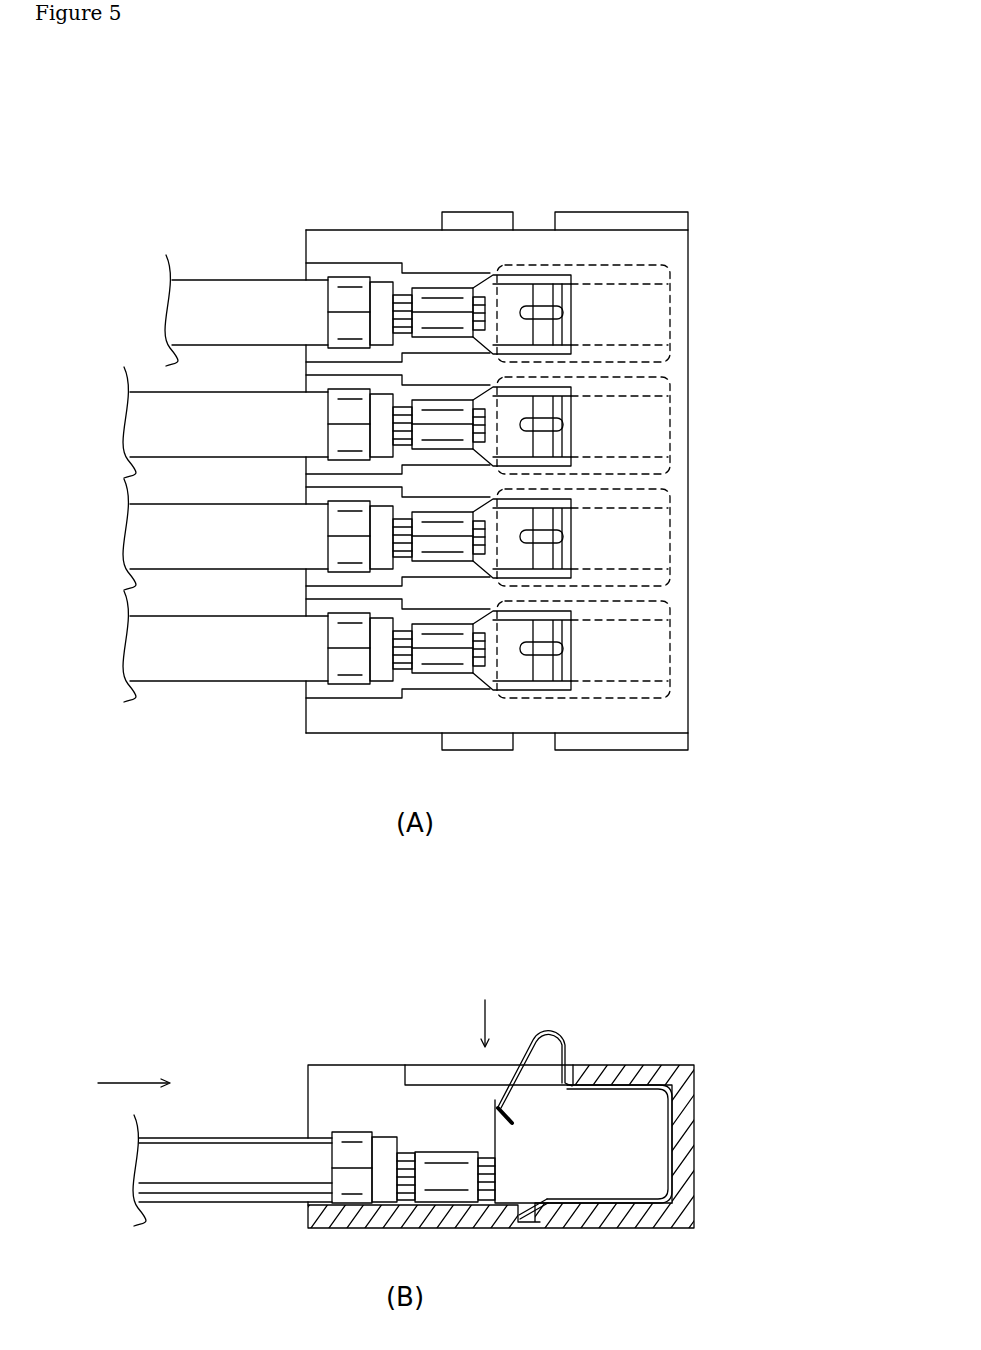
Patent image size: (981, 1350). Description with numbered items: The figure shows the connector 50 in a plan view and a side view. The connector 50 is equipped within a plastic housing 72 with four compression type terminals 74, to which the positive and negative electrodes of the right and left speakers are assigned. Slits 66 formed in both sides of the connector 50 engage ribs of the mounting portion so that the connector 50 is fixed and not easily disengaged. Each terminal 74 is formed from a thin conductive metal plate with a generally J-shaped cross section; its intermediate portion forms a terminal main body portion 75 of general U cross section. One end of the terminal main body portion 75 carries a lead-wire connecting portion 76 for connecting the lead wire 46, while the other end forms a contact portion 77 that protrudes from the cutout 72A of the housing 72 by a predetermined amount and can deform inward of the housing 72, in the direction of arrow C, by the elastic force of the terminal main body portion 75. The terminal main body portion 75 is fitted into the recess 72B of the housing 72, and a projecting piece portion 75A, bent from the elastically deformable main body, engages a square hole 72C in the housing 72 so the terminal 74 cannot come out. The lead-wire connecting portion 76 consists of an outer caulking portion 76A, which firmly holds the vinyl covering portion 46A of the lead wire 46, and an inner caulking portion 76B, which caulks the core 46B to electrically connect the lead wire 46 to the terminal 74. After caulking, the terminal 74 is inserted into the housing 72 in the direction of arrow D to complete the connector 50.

In FIG. 5A, the connector 50 is at (703, 162).
In FIG. 5B, the connector 50 is at (698, 996).
In FIG. 5A, the housing 72 is at (335, 228).
In FIG. 5B, the housing 72 is at (332, 1233).
In FIG. 5A, the cutout 72A is at (425, 278).
In FIG. 5B, the cutout 72A is at (445, 1073).
In FIG. 5B, the recess 72B is at (572, 1126).
In FIG. 5B, the square hole 72C is at (550, 1212).
In FIG. 5A, the compression type terminal 74 is at (597, 425).
In FIG. 5B, the compression type terminal 74 is at (523, 1005).
In FIG. 5A, the terminal main body portion 75 is at (640, 282).
In FIG. 5B, the terminal main body portion 75 is at (613, 1200).
In FIG. 5B, the projecting piece portion 75A is at (538, 1222).
In FIG. 5B, the lead-wire connecting portion 76 is at (351, 1107).
In FIG. 5A, the outer caulking portion 76A is at (327, 274).
In FIG. 5B, the outer caulking portion 76A is at (338, 1170).
In FIG. 5A, the inner caulking portion 76B is at (460, 256).
In FIG. 5B, the inner caulking portion 76B is at (445, 1160).
In FIG. 5A, the contact portion 77 is at (596, 260).
In FIG. 5B, the contact portion 77 is at (565, 1027).
In FIG. 5A, the lead wire 46 is at (148, 290).
In FIG. 5B, the lead wire 46 is at (188, 1211).
In FIG. 5A, the vinyl covering portion 46A is at (222, 295).
In FIG. 5B, the vinyl covering portion 46A is at (260, 1148).
In FIG. 5A, the core 46B is at (386, 264).
In FIG. 5B, the core 46B is at (407, 1157).
In FIG. 5A, the slit 66 is at (540, 225).
In FIG. 5B, the direction of arrow C is at (475, 1006).
In FIG. 5B, the direction of arrow D is at (122, 1080).